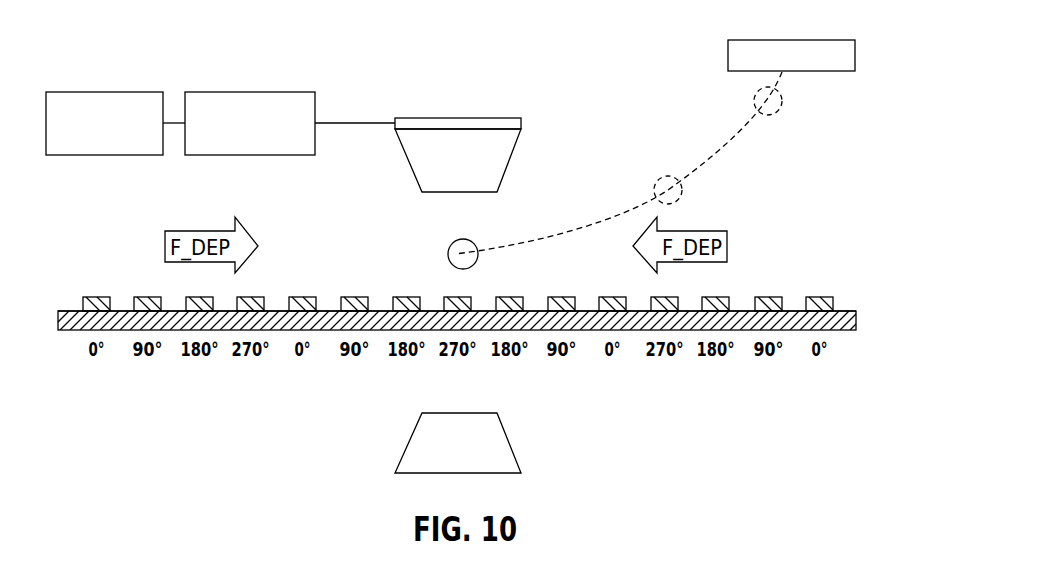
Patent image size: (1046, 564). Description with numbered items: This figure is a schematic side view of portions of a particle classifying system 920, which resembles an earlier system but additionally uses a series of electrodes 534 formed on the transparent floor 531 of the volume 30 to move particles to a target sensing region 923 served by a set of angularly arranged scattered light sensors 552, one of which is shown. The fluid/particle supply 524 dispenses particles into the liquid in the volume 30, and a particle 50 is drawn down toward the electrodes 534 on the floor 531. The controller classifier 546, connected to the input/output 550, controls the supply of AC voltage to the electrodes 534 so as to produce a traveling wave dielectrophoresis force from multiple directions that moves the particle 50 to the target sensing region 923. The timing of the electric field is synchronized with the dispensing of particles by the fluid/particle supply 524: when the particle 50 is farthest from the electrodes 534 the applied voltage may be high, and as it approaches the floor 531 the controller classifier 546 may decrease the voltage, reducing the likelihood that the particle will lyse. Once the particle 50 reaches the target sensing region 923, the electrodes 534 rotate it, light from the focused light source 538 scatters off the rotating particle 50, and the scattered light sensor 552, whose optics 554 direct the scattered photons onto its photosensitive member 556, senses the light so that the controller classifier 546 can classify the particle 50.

The particle classifying system 920 is at (199, 114).
The input/output 550 is at (112, 157).
The controller classifier 546 is at (305, 92).
The target sensing region 923 is at (451, 133).
The scattered light sensor 552 is at (491, 126).
The photosensitive member 556 is at (516, 118).
The optics 554 is at (505, 170).
The fluid/particle supply 524 is at (845, 40).
The particle 50 is at (783, 113).
The volume 30 is at (722, 212).
The transparent floor 531 is at (857, 311).
The electrodes 534 is at (145, 297).
The focused light source 538 is at (508, 447).